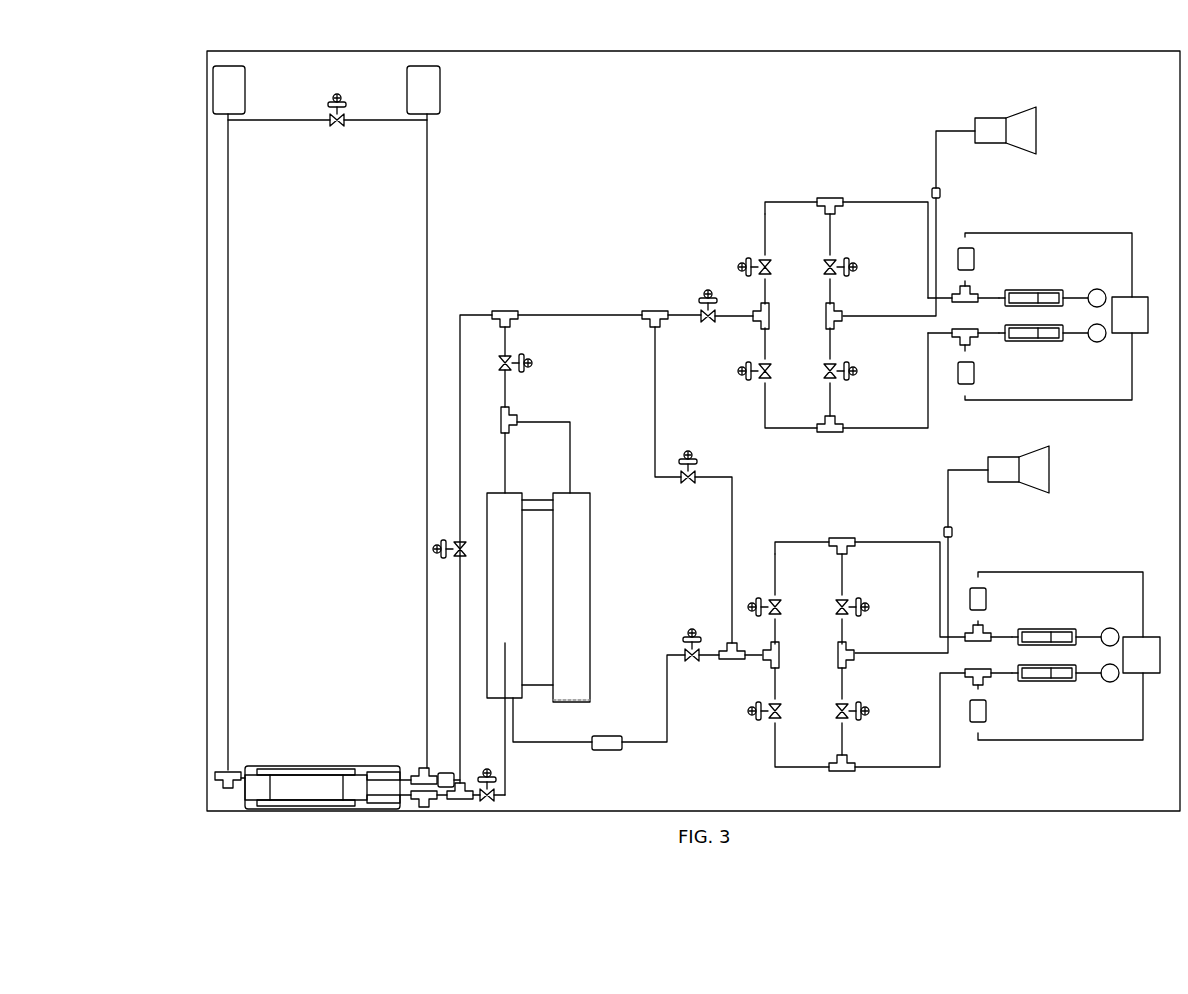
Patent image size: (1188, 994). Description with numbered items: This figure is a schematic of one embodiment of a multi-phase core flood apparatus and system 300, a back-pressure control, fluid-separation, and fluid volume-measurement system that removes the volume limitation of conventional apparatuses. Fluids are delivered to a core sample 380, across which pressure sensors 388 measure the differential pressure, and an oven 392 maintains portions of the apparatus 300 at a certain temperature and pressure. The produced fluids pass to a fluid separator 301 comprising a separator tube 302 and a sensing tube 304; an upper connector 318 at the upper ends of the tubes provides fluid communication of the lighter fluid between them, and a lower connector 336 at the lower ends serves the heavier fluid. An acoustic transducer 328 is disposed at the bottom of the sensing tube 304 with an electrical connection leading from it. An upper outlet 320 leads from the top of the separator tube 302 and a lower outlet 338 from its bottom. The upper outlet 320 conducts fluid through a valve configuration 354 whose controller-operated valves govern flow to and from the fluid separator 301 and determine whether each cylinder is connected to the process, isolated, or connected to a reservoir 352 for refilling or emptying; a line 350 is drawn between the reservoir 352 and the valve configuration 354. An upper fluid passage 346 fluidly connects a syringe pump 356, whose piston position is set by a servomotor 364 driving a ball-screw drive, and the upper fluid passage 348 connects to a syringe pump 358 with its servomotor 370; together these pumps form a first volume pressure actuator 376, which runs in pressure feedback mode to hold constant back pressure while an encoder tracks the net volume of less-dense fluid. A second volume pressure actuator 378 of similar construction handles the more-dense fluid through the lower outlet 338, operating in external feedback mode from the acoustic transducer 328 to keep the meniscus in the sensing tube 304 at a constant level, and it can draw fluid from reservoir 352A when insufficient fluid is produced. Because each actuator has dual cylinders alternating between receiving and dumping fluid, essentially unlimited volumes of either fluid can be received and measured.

The multi-phase core flood apparatus and system 300 is at (201, 86).
The fluid separator 301 is at (515, 561).
The separator tube 302 is at (487, 528).
The sensing tube 304 is at (590, 544).
The upper connector 318 is at (540, 498).
The upper outlet 320 is at (586, 313).
The acoustic transducer 328 is at (590, 702).
The lower connector 336 is at (535, 690).
The lower outlet 338 is at (545, 748).
The upper fluid passage 346 is at (928, 262).
The upper fluid passage 348 is at (928, 390).
The vent line 350 is at (937, 152).
The reservoir 352 is at (975, 118).
The reservoir 352A is at (1048, 460).
The valve configuration 354 is at (826, 358).
The syringe pump 356 is at (1040, 284).
The syringe pump 358 is at (1047, 346).
The servomotor 364 is at (1098, 290).
The servomotor 370 is at (1098, 343).
The first volume pressure actuator 376 is at (1014, 280).
The second volume pressure actuator 378 is at (1108, 548).
The core sample 380 is at (300, 746).
The pressure sensors 388 is at (407, 84).
The oven 392 is at (528, 53).